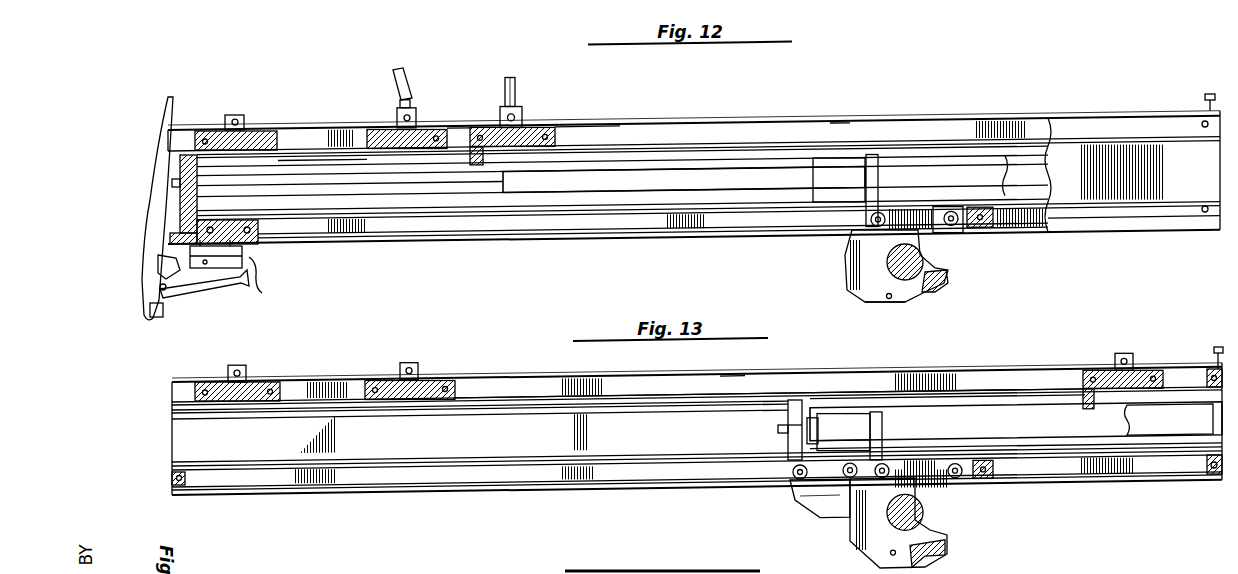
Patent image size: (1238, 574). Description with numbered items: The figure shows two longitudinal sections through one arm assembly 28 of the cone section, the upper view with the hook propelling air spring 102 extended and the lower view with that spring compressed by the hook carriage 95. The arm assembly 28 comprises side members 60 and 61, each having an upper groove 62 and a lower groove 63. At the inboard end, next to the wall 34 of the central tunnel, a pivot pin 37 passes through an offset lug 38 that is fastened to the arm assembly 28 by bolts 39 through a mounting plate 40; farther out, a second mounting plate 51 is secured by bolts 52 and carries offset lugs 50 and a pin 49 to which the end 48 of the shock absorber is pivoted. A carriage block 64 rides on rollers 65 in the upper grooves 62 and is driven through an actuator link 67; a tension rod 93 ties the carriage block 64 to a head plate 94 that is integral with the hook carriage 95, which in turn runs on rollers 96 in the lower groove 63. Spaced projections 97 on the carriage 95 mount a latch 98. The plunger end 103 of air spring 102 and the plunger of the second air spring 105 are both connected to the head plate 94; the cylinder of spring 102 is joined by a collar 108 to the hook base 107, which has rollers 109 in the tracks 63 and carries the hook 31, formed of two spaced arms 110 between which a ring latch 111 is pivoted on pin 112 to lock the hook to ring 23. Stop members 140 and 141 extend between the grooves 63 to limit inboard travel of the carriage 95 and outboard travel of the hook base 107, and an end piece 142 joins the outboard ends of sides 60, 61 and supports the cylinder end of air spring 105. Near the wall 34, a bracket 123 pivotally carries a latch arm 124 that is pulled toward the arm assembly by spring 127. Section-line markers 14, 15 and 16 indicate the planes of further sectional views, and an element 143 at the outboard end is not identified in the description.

In FIG. 12, the piston ring 14 is at (1222, 83).
In FIG. 12, the groove 15 is at (968, 83).
In FIG. 12, the slots 16 is at (283, 72).
In FIG. 12, the ring 23 is at (922, 260).
In FIG. 13, the ring 23 is at (924, 506).
In FIG. 12, the arm assembly 28 is at (876, 87).
In FIG. 13, the arm assembly 28 is at (578, 506).
In FIG. 12, the hook 31 is at (925, 311).
In FIG. 12, the wall 34 is at (148, 292).
In FIG. 12, the pivot pin 37 is at (236, 118).
In FIG. 12, the offset lug 38 is at (245, 118).
In FIG. 12, the bolts 39 is at (279, 138).
In FIG. 12, the mounting plate 40 is at (213, 134).
In FIG. 13, the mounting plate 40 is at (215, 386).
In FIG. 12, the end of shock absorber 48 is at (403, 66).
In FIG. 12, the pin 49 is at (412, 116).
In FIG. 12, the offset lugs 50 is at (418, 118).
In FIG. 12, the mounting plate 51 is at (453, 134).
In FIG. 13, the mounting plate 51 is at (441, 383).
In FIG. 12, the bolts 52 is at (372, 138).
In FIG. 12, the side member 60 is at (912, 123).
In FIG. 13, the side member 60 is at (620, 378).
In FIG. 12, the side member 61 is at (1183, 185).
In FIG. 12, the upper groove 62 is at (840, 123).
In FIG. 13, the upper groove 62 is at (730, 376).
In FIG. 12, the lower groove 63 is at (792, 224).
In FIG. 13, the lower groove 63 is at (720, 478).
In FIG. 12, the carriage block 64 is at (528, 137).
In FIG. 13, the carriage block 64 is at (1150, 377).
In FIG. 12, the rollers 65 is at (566, 118).
In FIG. 12, the actuator link 67 is at (516, 85).
In FIG. 12, the tension rod 93 is at (322, 160).
In FIG. 13, the tension rod 93 is at (932, 397).
In FIG. 12, the head plate 94 is at (183, 173).
In FIG. 13, the head plate 94 is at (797, 399).
In FIG. 12, the hook carriage 95 is at (188, 241).
In FIG. 13, the hook carriage 95 is at (832, 517).
In FIG. 13, the rollers 96 is at (800, 480).
In FIG. 12, the spaced projections 97 is at (228, 269).
In FIG. 12, the latch 98 is at (261, 292).
In FIG. 12, the air spring 102 is at (732, 178).
In FIG. 13, the air spring 102 is at (1016, 425).
In FIG. 12, the plunger end 103 is at (470, 196).
In FIG. 12, the second air spring 105 is at (1021, 176).
In FIG. 13, the second air spring 105 is at (1169, 419).
In FIG. 12, the hook base 107 is at (940, 229).
In FIG. 12, the collar 108 is at (875, 155).
In FIG. 12, the rollers 109 is at (852, 261).
In FIG. 13, the rollers 109 is at (962, 480).
In FIG. 12, the spaced arms 110 is at (854, 293).
In FIG. 13, the spaced arms 110 is at (857, 550).
In FIG. 12, the ring latch 111 is at (943, 277).
In FIG. 13, the ring latch 111 is at (942, 554).
In FIG. 12, the pin 112 is at (886, 300).
In FIG. 13, the pin 112 is at (892, 557).
In FIG. 12, the bracket 123 is at (164, 304).
In FIG. 12, the latch arm 124 is at (222, 292).
In FIG. 12, the spring 127 is at (170, 273).
In FIG. 12, the stop member 140 is at (176, 234).
In FIG. 13, the stop member 140 is at (182, 491).
In FIG. 12, the stop member 141 is at (986, 216).
In FIG. 13, the stop member 141 is at (990, 474).
In FIG. 13, the end piece 142 is at (1204, 363).
In FIG. 13, the end screw 143 is at (1216, 476).